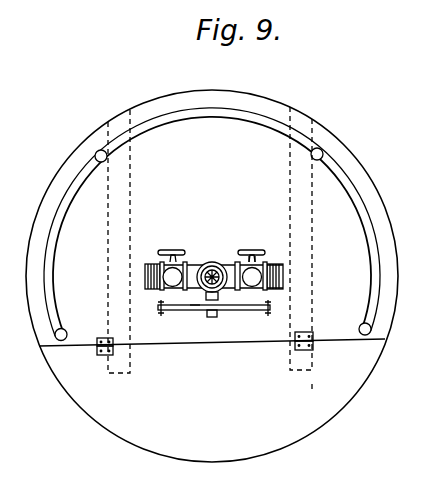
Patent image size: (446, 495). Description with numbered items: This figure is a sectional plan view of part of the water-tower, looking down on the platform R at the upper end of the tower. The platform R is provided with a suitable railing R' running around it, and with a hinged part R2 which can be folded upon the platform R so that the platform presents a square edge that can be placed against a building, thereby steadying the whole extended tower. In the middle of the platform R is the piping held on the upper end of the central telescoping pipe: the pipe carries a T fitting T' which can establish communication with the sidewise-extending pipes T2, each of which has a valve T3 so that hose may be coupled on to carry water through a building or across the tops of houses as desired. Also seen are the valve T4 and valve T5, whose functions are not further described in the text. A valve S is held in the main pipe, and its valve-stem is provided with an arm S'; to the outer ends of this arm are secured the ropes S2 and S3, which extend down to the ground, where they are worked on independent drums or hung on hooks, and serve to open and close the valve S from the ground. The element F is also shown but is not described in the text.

The platform R is at (212, 276).
The railing R' is at (212, 224).
The hinged part R2 is at (212, 385).
The T T' is at (221, 258).
The sidewise-extending pipes T2 is at (315, 272).
The valve T3 is at (171, 250).
The valve stem T4 is at (246, 216).
The right valve T5 is at (266, 249).
The meter F is at (219, 262).
The valve S is at (214, 331).
The arm S' is at (188, 318).
The rope S2 is at (161, 311).
The rope S3 is at (267, 311).